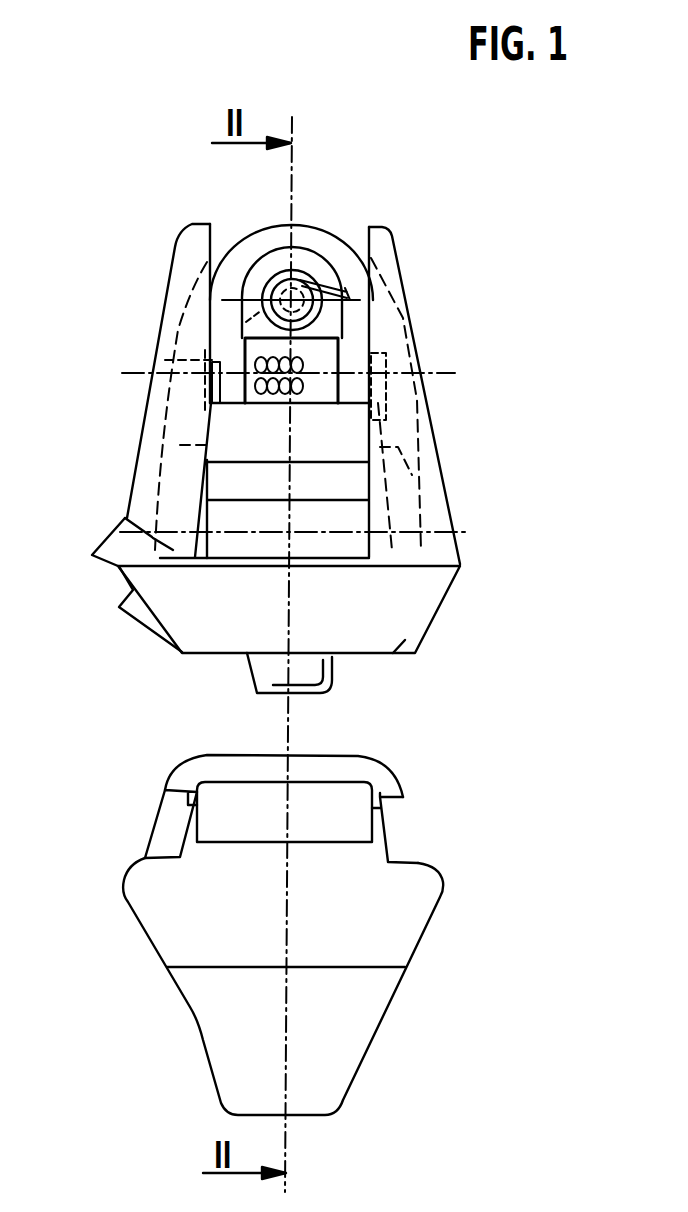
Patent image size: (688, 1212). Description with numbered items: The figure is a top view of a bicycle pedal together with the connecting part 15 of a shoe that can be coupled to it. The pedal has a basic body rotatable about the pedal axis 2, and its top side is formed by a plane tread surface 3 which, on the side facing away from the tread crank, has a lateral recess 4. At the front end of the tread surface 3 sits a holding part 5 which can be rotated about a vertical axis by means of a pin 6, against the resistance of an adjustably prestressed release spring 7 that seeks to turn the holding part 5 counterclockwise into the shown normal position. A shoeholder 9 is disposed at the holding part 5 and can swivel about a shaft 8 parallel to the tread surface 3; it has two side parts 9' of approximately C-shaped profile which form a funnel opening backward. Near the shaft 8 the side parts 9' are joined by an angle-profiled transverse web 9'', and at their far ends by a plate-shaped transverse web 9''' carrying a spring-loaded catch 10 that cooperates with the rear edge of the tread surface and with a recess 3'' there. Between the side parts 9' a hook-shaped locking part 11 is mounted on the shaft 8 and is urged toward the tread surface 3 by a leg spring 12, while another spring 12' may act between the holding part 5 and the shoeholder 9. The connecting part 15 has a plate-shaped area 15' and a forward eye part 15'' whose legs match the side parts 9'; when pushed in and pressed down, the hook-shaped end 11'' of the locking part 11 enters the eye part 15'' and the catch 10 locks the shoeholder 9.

The pedal axis 2 is at (465, 537).
The tread surface 3 is at (304, 404).
The recess 3'' is at (120, 585).
The lateral recess 4 is at (212, 434).
The holding part 5 is at (330, 243).
The pin 6 is at (283, 291).
The release spring 7 is at (298, 288).
The shaft 8 is at (440, 372).
The shoeholder 9 is at (315, 394).
The side parts 9' is at (295, 495).
The transverse web 9'' is at (343, 425).
The plate-shaped transverse web 9''' is at (299, 609).
The catch 10 is at (258, 678).
The locking part 11 is at (289, 510).
The hook-shaped end 11'' is at (264, 582).
The spring 12 is at (230, 348).
The spring 12' is at (428, 386).
The connecting part 15 is at (310, 986).
The plate-shaped area 15' is at (247, 865).
The eye part 15'' is at (296, 781).